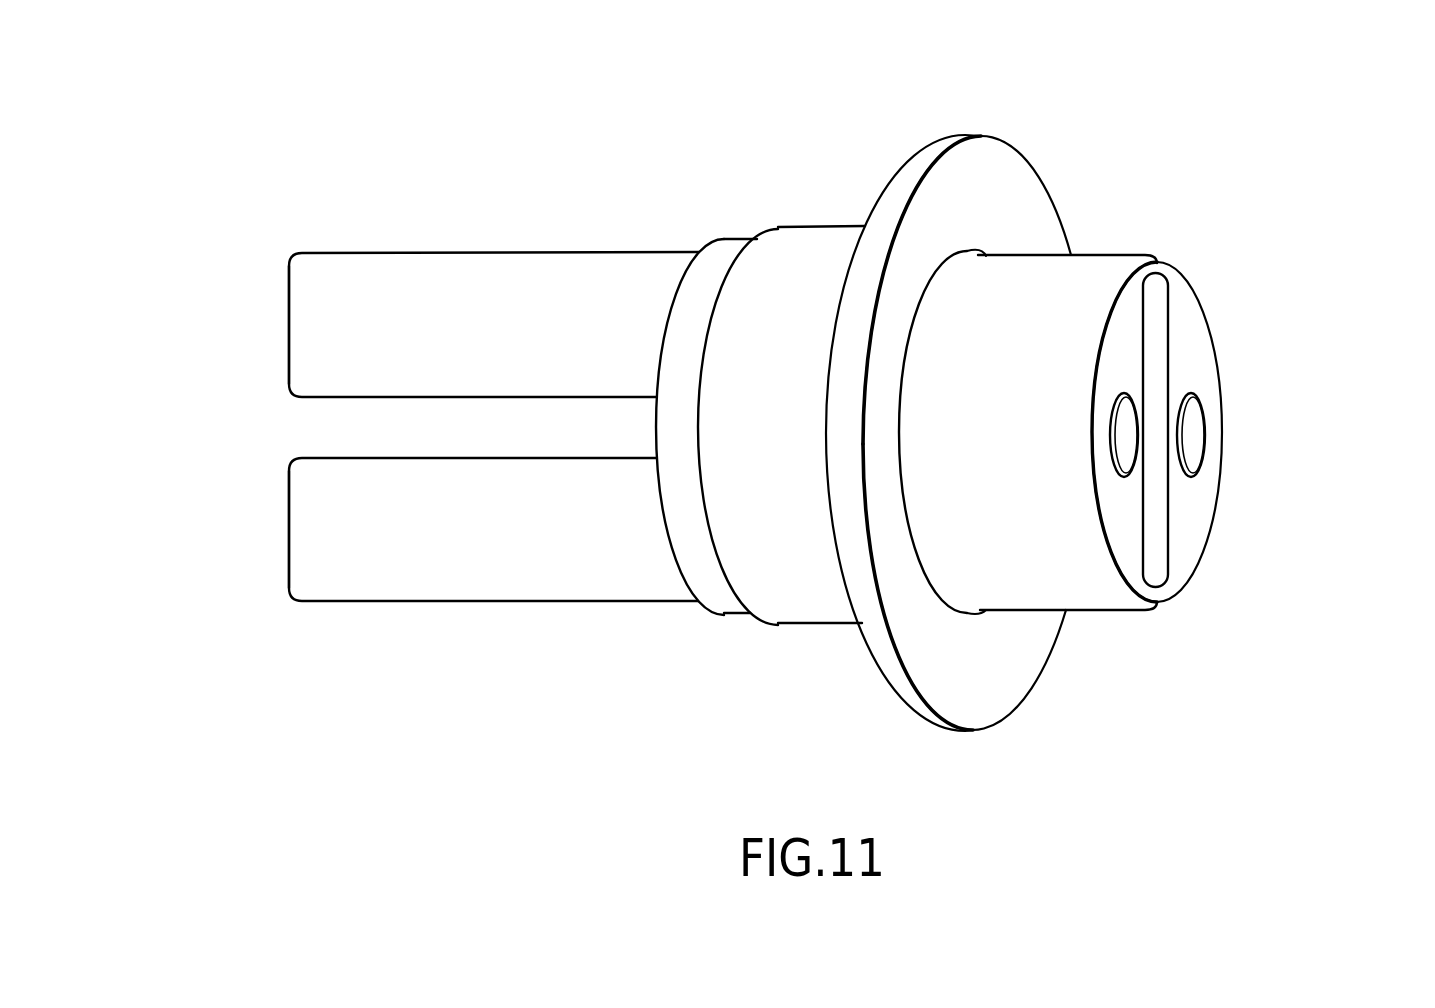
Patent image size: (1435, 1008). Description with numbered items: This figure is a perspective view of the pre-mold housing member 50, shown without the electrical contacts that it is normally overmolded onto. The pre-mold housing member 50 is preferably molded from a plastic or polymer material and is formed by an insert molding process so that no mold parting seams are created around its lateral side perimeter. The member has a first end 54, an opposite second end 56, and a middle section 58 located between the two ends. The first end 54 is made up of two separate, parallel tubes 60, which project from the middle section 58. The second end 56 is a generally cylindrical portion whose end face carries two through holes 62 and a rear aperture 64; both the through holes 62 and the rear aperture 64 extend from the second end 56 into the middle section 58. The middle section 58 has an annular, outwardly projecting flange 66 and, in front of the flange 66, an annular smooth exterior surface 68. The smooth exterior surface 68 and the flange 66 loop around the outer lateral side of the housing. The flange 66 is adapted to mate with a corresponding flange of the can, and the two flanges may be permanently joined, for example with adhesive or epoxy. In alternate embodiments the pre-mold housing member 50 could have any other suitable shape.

The pre-mold housing member 50 is at (318, 137).
The first end 54 is at (228, 315).
The second end 56 is at (1311, 503).
The middle section 58 is at (805, 648).
The tubes 60 is at (337, 375).
The through holes 62 is at (1125, 438).
The rear aperture 64 is at (1160, 307).
The flange 66 is at (937, 138).
The smooth exterior surface 68 is at (807, 240).